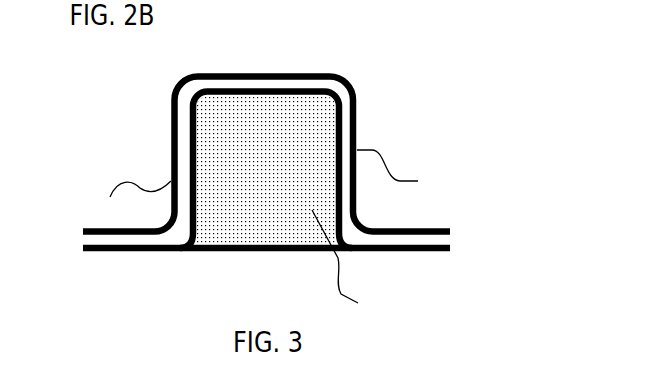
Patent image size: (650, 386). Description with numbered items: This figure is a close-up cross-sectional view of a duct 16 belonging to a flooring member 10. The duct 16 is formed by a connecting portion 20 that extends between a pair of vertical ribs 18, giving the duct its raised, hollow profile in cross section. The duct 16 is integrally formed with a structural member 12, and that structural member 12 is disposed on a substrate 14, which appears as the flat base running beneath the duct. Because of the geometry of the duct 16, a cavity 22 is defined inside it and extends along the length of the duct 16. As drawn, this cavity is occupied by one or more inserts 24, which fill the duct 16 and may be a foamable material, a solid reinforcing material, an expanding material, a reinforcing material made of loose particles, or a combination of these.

The flooring member 10 is at (500, 98).
The structural member 12 is at (118, 129).
The substrate 14 is at (193, 255).
The duct 16 is at (348, 69).
The vertical ribs 18 is at (261, 187).
The connecting portion 20 is at (292, 88).
The cavity 22 is at (349, 268).
The inserts 24 is at (266, 171).